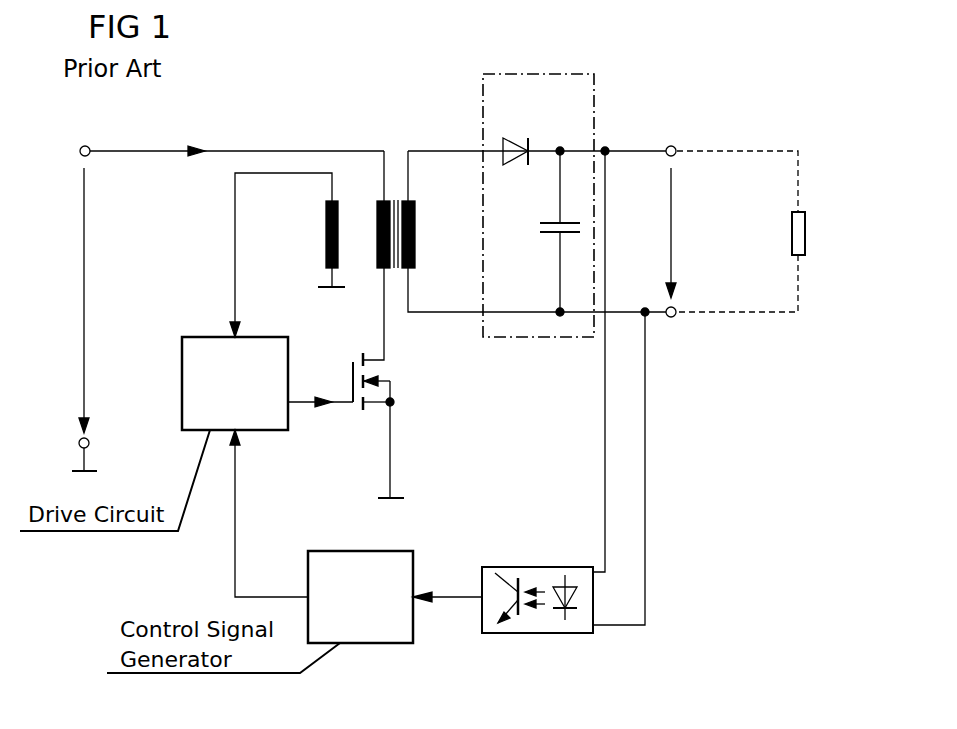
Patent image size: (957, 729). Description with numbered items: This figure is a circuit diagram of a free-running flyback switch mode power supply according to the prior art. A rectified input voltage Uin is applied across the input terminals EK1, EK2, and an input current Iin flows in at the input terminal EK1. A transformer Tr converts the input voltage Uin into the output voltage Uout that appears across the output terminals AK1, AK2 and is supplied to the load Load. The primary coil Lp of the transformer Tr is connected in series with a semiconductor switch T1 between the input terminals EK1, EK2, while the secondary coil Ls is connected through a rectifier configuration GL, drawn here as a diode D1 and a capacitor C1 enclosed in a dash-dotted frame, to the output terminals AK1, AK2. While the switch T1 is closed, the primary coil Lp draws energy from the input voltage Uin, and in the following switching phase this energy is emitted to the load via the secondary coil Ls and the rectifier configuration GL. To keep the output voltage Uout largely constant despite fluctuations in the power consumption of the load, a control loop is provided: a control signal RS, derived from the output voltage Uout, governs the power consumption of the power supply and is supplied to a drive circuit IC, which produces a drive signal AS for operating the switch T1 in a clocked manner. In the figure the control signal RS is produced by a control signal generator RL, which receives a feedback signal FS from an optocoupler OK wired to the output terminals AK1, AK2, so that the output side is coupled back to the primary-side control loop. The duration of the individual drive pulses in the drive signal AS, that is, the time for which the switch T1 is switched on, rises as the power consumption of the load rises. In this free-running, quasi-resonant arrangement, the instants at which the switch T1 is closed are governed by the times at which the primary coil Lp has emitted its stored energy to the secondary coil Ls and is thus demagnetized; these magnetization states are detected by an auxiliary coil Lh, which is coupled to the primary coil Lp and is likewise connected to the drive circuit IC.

The input terminal EK1 is at (223, 138).
The input terminal EK2 is at (105, 454).
The input current Iin is at (193, 138).
The rectified input voltage Uin is at (102, 300).
The auxiliary coil Lh is at (326, 226).
The transformer Tr is at (398, 136).
The primary coil Lp is at (378, 222).
The secondary coil Ls is at (415, 248).
The rectifier configuration GL is at (594, 90).
The diode D1 is at (519, 138).
The capacitor C1 is at (540, 223).
The output terminal AK1 is at (675, 138).
The output terminal AK2 is at (675, 329).
The output voltage Uout is at (697, 233).
The load Load is at (805, 233).
The drive circuit IC is at (235, 383).
The drive signal AS is at (320, 390).
The semiconductor switch T1 is at (354, 410).
The control signal RS is at (269, 513).
The control signal generator RL is at (360, 597).
The feedback signal FS is at (447, 585).
The optocoupler OK is at (538, 567).